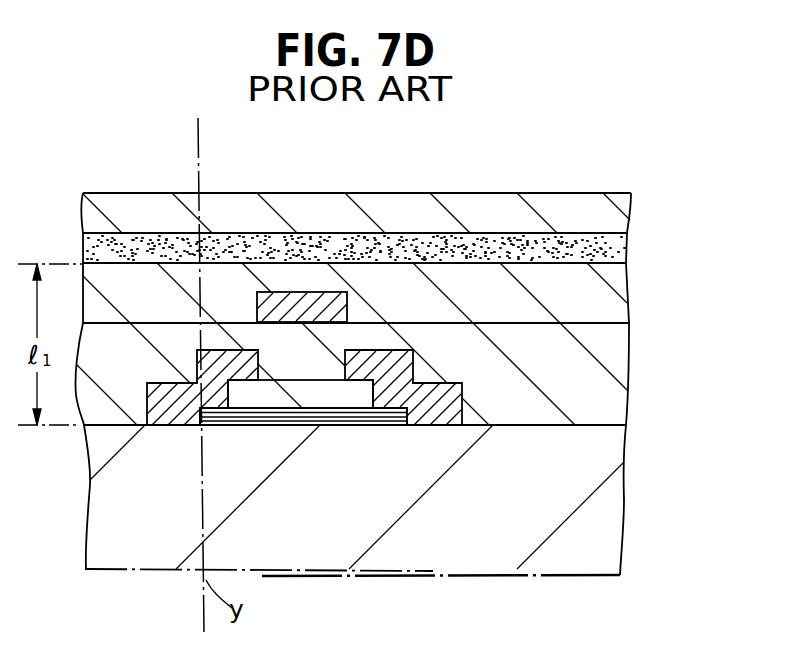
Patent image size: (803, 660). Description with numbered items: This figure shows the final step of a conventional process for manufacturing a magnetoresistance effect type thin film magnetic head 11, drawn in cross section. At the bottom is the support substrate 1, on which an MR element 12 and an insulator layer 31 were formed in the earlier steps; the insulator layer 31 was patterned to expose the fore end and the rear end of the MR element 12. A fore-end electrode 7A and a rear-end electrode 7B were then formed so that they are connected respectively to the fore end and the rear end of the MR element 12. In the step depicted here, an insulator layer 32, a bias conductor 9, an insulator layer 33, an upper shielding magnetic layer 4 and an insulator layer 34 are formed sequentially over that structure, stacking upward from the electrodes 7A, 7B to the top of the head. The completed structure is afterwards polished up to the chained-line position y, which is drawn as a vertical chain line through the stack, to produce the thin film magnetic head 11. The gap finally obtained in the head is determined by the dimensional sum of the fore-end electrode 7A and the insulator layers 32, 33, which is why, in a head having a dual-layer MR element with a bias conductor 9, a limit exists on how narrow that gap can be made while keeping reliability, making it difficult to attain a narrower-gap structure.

The thin film magnetic head 11 is at (112, 128).
The insulator layer 34 is at (240, 200).
The upper shielding magnetic layer 4 is at (499, 245).
The insulator layer 33 is at (317, 275).
The insulator layer 32 is at (318, 353).
The bias conductor 9 is at (349, 298).
The fore-end electrode 7A is at (162, 426).
The rear-end electrode 7B is at (421, 410).
The MR element 12 is at (242, 426).
The insulator layer 31 is at (337, 400).
The support substrate 1 is at (607, 556).